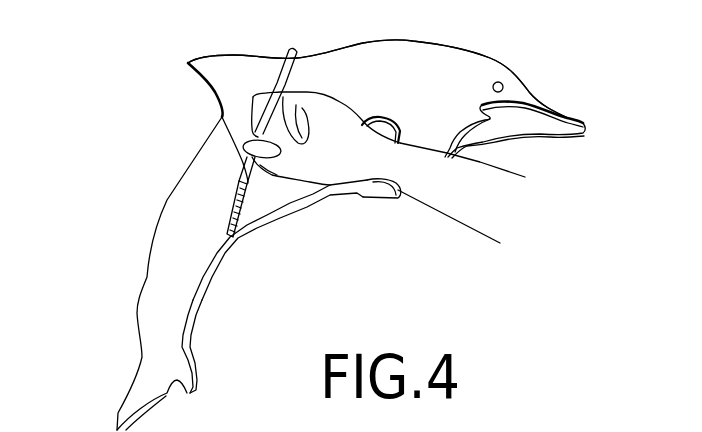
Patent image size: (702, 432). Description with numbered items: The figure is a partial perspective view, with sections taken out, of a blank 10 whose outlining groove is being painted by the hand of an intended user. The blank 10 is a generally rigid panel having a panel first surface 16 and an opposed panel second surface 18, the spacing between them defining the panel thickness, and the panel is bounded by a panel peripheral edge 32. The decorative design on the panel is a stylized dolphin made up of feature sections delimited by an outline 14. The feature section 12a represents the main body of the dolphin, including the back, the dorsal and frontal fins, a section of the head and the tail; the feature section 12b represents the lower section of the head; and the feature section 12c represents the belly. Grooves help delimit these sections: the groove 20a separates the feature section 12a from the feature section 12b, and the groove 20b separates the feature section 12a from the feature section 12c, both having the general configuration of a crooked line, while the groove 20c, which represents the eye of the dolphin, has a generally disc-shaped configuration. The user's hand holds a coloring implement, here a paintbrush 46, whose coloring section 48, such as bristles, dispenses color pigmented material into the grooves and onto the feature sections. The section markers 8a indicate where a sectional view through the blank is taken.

The blank 10 is at (106, 73).
The feature section 12a is at (157, 278).
The feature section 12b is at (538, 123).
The feature section 12c is at (246, 222).
The outline 14 is at (530, 103).
The panel first surface 16 is at (363, 62).
The panel second surface 18 is at (207, 303).
The groove 20a is at (570, 112).
The groove 20b is at (402, 123).
The groove 20c is at (502, 83).
The panel peripheral edge 32 is at (188, 323).
The paintbrush 46 is at (290, 50).
The coloring section 48 is at (223, 121).
The section line 8a- 8a is at (219, 158).